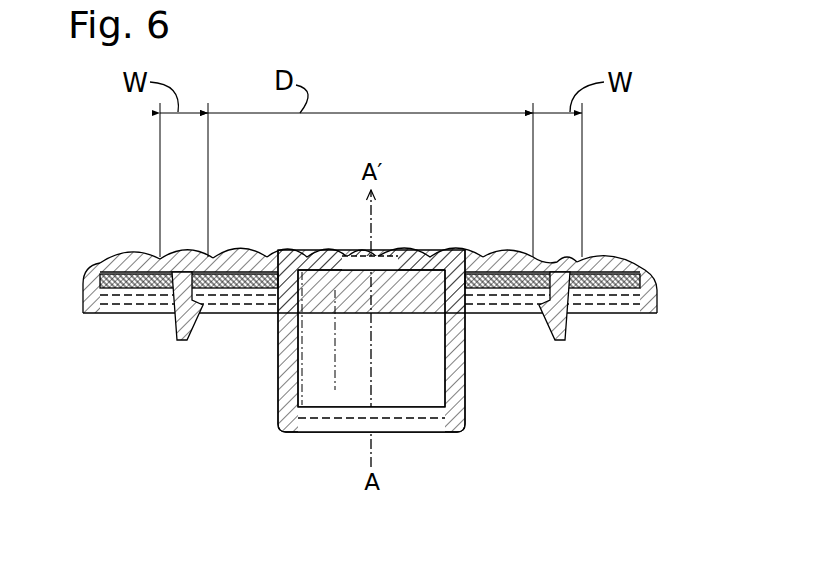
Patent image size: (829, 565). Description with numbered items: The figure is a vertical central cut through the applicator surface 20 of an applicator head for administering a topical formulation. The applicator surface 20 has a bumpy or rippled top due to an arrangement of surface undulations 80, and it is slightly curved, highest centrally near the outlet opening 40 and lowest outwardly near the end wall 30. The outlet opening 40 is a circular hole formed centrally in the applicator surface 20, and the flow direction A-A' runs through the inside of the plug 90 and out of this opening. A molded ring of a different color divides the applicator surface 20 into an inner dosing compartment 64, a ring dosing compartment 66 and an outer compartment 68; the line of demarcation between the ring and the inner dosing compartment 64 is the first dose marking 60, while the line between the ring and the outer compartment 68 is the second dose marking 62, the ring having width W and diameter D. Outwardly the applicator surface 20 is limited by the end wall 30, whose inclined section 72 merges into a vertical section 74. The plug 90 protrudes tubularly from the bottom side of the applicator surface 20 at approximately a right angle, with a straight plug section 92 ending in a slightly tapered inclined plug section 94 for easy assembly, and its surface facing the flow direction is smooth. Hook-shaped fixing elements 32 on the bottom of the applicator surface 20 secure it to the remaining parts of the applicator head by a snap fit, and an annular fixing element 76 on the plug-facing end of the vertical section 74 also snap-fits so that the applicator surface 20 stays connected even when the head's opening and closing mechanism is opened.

The applicator surface 20 is at (100, 262).
The end wall 30 is at (85, 292).
The fixing elements 32 is at (175, 318).
The outlet opening 40 is at (390, 256).
The first dose marking 60 is at (533, 257).
The second dose marking 62 is at (583, 262).
The inner dosing compartment 64 is at (282, 246).
The ring dosing compartment 66 is at (189, 250).
The outer compartment 68 is at (140, 258).
The inclined section 72 is at (645, 270).
The vertical section 74 is at (660, 298).
The annular fixing element 76 is at (604, 315).
The surface undulations 80 is at (605, 262).
The plug 90 is at (268, 392).
The straight plug section 92 is at (465, 388).
The inclined plug section 94 is at (457, 425).